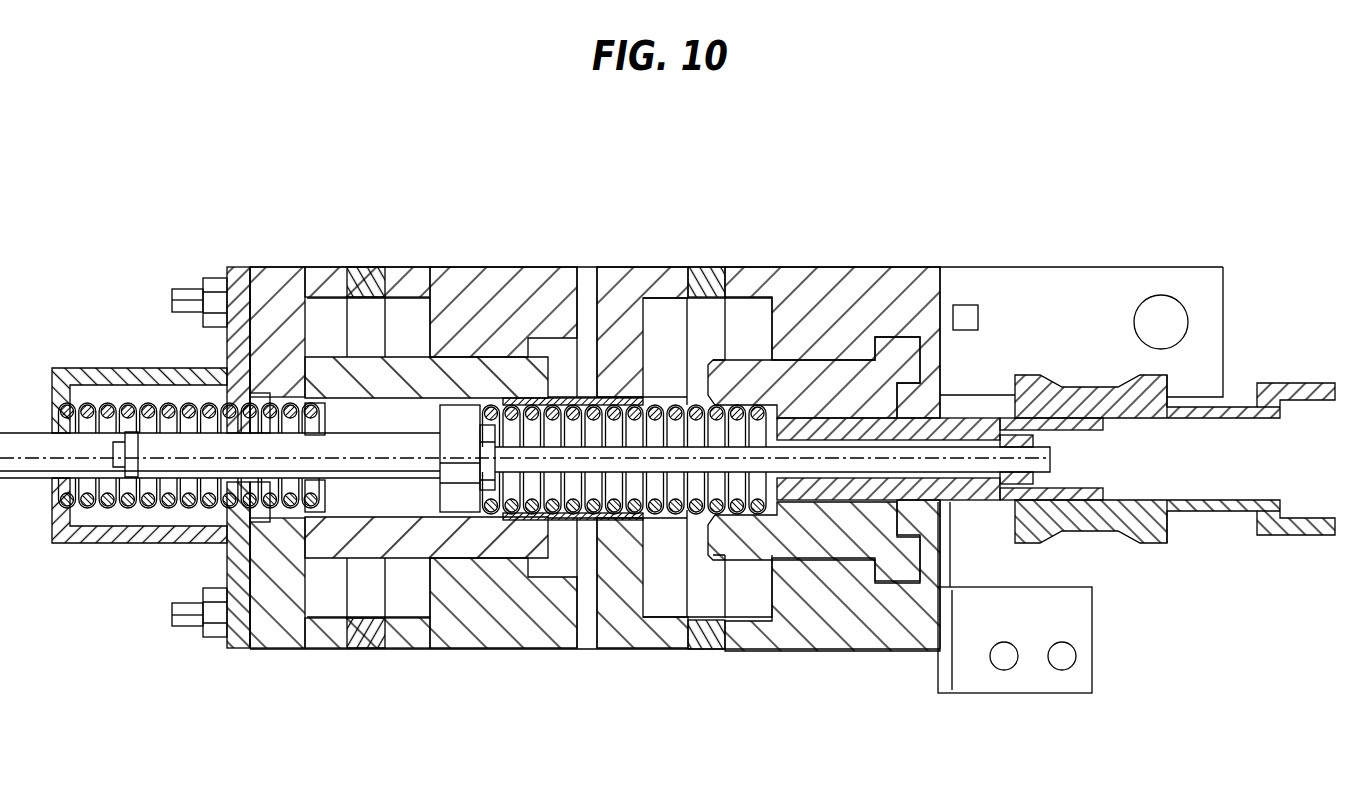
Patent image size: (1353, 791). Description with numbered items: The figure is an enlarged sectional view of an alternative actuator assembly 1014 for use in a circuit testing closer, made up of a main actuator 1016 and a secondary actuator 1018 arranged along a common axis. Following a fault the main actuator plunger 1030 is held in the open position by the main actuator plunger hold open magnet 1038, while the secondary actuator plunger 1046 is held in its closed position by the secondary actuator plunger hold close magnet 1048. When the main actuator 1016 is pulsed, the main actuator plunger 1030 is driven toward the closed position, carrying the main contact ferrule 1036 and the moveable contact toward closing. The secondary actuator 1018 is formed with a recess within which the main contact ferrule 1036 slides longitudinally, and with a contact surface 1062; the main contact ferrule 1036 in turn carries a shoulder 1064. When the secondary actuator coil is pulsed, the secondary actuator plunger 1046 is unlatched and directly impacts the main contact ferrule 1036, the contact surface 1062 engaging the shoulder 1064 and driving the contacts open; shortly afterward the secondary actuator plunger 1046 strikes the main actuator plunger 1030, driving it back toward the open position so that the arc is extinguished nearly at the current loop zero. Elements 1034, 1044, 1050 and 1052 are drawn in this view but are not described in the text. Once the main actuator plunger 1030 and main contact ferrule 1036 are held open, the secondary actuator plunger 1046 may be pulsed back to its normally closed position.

The actuator assembly 1014 is at (1080, 152).
The main actuator 1016 is at (866, 705).
The secondary actuator 1018 is at (362, 702).
The main actuator plunger 1030 is at (865, 288).
The fastener 1034 is at (732, 413).
The main contact ferrule 1036 is at (610, 453).
The main actuator plunger hold open magnet 1038 is at (713, 650).
The sleeve 1044 is at (1008, 432).
The secondary actuator plunger 1046 is at (328, 543).
The secondary actuator plunger hold close magnet 1048 is at (364, 268).
The spring 1050 is at (90, 500).
The spring cup 1052 is at (143, 540).
The contact surface 1062 is at (370, 498).
The shoulder 1064 is at (782, 507).